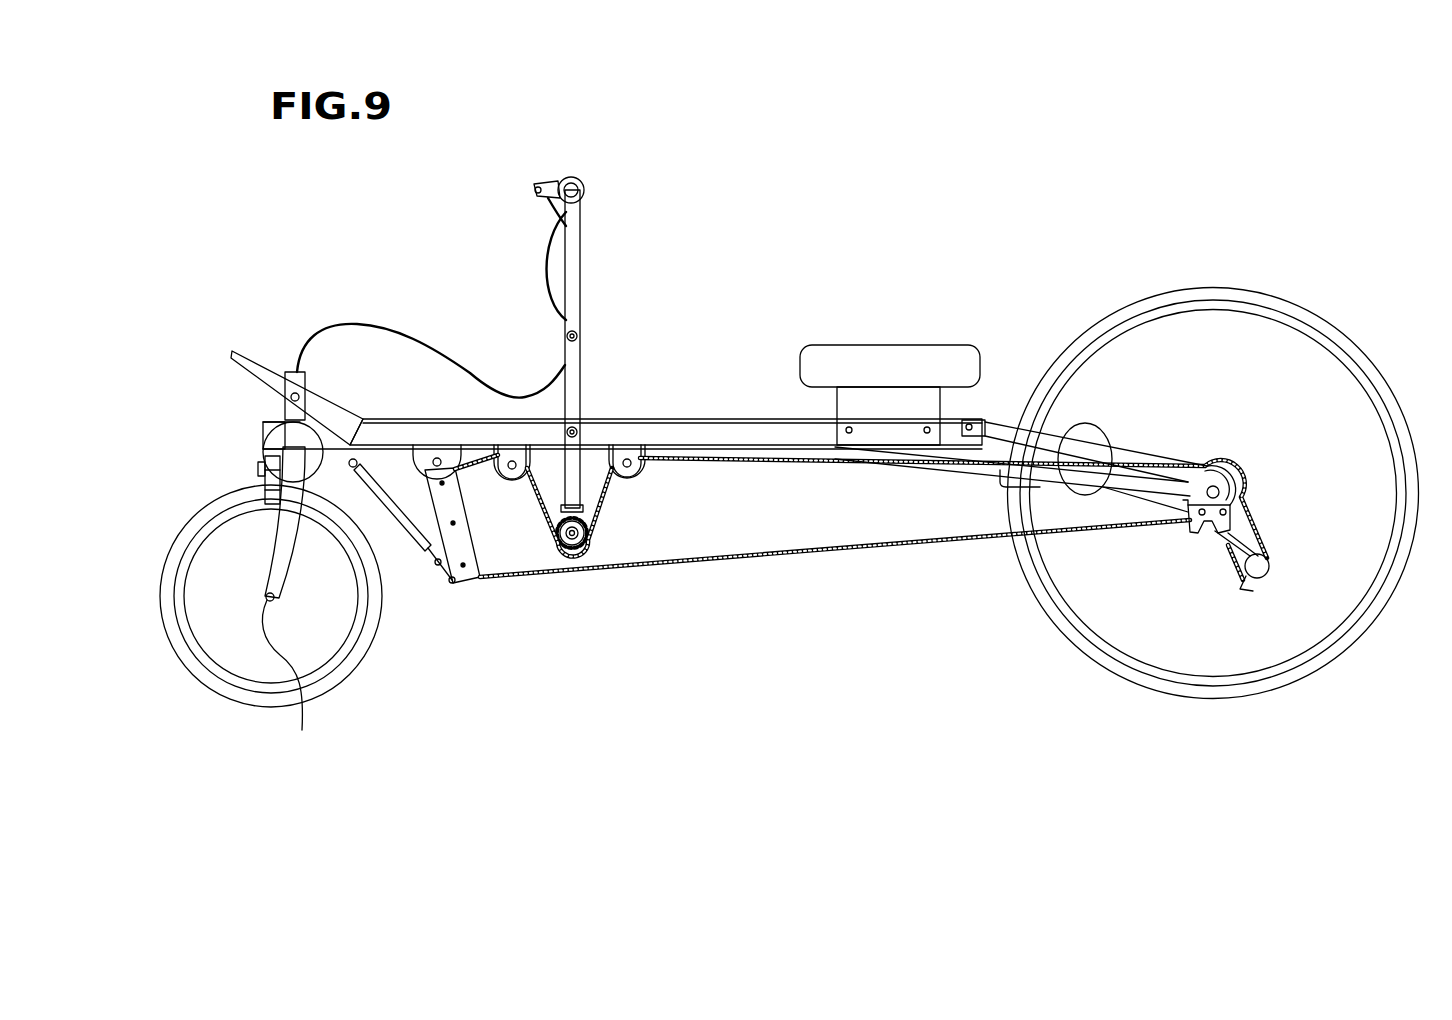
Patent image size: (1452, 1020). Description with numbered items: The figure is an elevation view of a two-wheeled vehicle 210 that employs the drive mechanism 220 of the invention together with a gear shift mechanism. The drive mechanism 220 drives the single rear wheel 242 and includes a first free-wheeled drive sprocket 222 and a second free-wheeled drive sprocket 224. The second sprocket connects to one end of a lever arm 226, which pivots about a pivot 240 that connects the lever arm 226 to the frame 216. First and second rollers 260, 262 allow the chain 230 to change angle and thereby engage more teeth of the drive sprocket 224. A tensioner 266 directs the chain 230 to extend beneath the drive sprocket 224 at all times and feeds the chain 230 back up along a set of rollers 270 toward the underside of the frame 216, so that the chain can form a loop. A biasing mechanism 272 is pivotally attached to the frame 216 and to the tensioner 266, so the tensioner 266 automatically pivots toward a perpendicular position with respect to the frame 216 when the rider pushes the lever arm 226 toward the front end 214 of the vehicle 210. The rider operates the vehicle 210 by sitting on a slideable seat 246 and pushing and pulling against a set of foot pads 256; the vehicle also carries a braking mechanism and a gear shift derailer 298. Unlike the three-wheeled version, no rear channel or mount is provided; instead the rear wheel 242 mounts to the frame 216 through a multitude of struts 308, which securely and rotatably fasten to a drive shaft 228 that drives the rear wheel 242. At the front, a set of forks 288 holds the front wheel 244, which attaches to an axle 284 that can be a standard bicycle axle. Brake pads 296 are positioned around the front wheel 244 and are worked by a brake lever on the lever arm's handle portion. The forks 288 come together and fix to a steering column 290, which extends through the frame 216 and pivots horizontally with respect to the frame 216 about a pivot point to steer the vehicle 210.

The two-wheeled vehicle 210 is at (779, 200).
The front end 214 is at (180, 320).
The frame 216 is at (622, 407).
The drive mechanism 220 is at (768, 630).
The first free-wheeled drive sprocket 222 is at (1263, 459).
The second free-wheeled drive sprocket 224 is at (600, 548).
The lever arm 226 is at (580, 360).
The drive shaft 228 is at (1220, 492).
The chain 230 is at (878, 555).
The pivot 240 is at (560, 433).
The rear wheel 242 is at (1290, 288).
The front wheel 244 is at (214, 503).
The slideable seat 246 is at (940, 345).
The foot pads 256 is at (297, 372).
The first roller 260 is at (648, 468).
The second roller 262 is at (515, 483).
The tensioner 266 is at (470, 592).
The set of rollers 270 is at (442, 483).
The biasing mechanism 272 is at (400, 535).
The axle 284 is at (287, 680).
The forks 288 is at (275, 553).
The steering column 290 is at (285, 410).
The brake pads 296 is at (263, 478).
The gear shift derailer 298 is at (1268, 574).
The struts 308 is at (1120, 445).